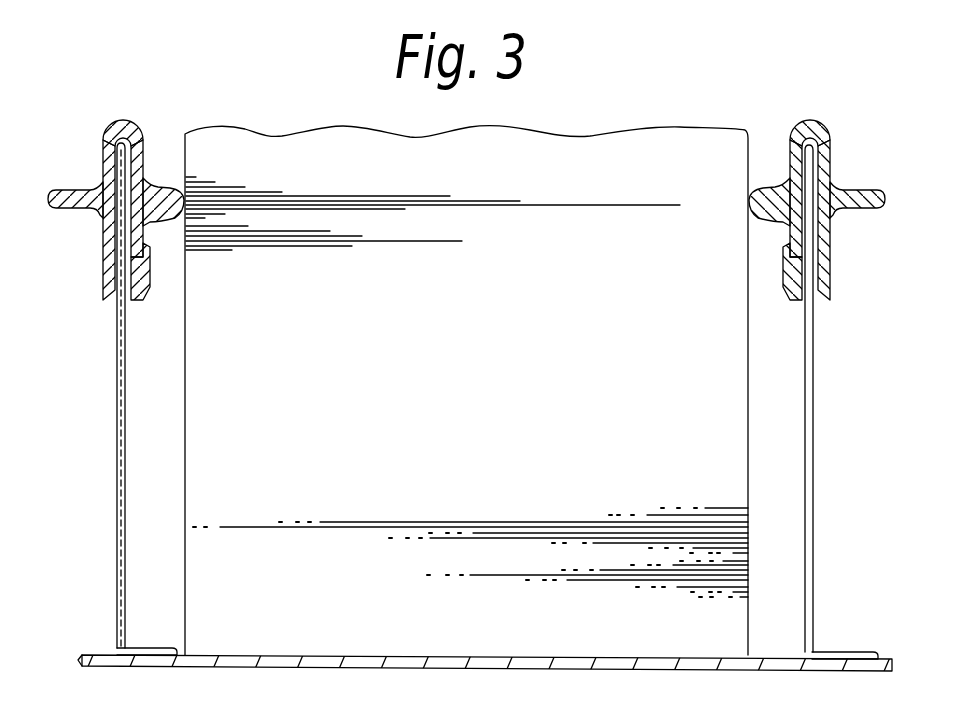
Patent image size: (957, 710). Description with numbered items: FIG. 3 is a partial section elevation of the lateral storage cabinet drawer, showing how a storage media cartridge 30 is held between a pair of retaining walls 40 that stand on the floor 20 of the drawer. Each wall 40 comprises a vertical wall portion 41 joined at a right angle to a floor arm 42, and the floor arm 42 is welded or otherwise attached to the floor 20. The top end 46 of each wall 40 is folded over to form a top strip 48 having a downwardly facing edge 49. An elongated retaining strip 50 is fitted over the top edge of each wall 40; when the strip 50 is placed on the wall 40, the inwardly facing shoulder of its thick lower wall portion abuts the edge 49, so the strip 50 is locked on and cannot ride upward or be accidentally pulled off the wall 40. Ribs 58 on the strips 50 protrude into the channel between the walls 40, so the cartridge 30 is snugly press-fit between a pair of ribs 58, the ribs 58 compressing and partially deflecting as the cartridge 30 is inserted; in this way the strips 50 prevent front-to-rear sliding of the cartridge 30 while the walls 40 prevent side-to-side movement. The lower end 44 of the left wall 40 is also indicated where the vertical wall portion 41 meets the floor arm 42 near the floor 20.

The floor 20 is at (86, 652).
The storage media cartridge 30 is at (482, 353).
The retaining wall 40 is at (116, 330).
The vertical wall portion 41 is at (116, 434).
The floor arm 42 is at (149, 647).
The lower end of post 44 is at (98, 602).
The top end 46 is at (91, 228).
The top strip 48 is at (124, 118).
The downwardly facing edge 49 is at (143, 264).
The retaining strip 50 is at (110, 129).
The rib 58 is at (176, 190).